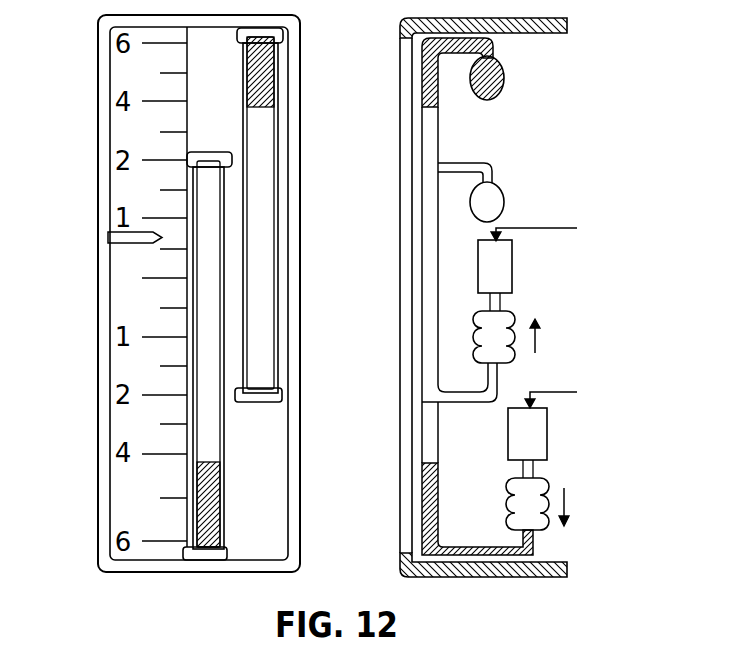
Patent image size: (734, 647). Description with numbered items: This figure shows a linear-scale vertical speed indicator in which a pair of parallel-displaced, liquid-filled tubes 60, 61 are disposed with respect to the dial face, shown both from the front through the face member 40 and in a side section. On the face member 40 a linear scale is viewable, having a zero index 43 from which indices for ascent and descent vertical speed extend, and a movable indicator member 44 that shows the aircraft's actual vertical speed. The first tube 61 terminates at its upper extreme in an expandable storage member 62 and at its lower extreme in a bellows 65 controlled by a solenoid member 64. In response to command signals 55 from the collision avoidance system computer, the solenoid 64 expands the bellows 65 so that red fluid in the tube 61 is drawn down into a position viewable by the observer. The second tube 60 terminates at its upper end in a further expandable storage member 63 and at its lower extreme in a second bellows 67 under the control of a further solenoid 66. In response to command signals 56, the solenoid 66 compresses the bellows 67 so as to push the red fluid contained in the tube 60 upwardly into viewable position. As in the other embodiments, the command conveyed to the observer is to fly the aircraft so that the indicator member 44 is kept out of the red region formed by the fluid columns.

The face member 40 is at (102, 33).
The zero index 43 is at (113, 277).
The indicator member 44 is at (127, 238).
The command signals 55 is at (540, 227).
The command signals 56 is at (534, 392).
The second tube 60 is at (212, 192).
The first tube 61 is at (265, 178).
The expandable storage member 62 is at (504, 70).
The expandable storage member 63 is at (502, 204).
The solenoid member 64 is at (507, 264).
The bellows 65 is at (512, 313).
The solenoid 66 is at (543, 431).
The bellows 67 is at (547, 482).